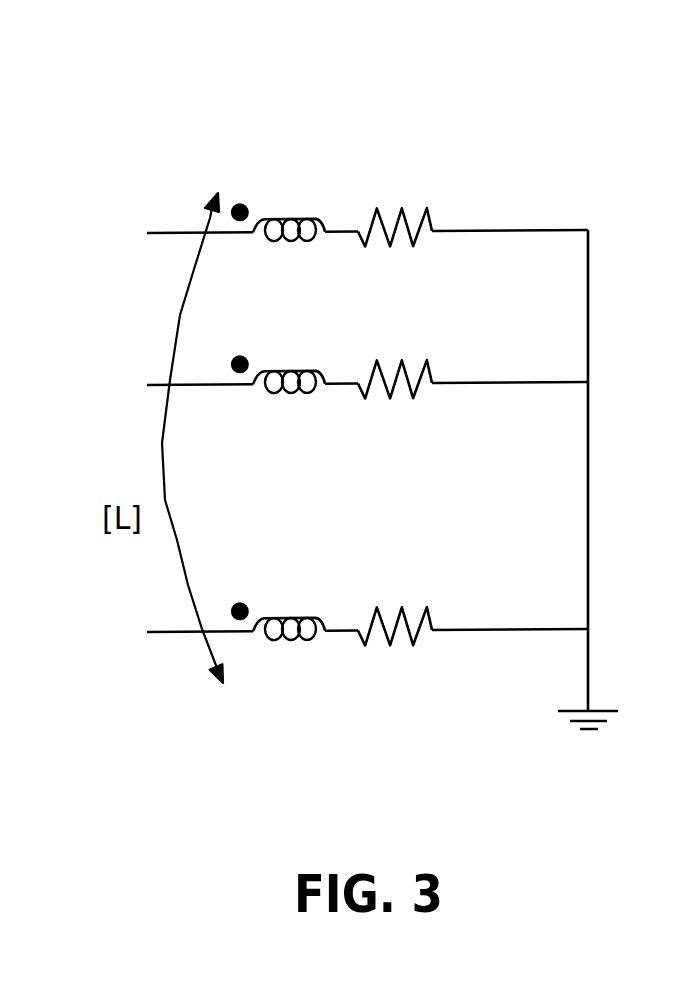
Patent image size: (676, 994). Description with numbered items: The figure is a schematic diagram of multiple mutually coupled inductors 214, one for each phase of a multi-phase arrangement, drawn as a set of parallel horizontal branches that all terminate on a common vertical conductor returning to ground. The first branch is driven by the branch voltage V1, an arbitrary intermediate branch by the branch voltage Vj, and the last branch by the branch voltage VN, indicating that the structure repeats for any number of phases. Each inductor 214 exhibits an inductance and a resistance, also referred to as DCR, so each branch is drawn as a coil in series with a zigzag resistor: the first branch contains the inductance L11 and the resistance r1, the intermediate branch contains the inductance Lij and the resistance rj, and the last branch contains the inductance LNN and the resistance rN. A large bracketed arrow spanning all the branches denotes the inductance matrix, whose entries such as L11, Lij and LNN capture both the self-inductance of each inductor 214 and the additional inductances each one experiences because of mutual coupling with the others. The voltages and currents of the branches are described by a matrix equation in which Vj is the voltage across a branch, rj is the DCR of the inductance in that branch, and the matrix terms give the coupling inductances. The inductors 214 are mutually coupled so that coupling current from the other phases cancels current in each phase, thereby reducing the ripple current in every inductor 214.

The inductor 214 is at (407, 97).
The resistance of the first phase inductor r1 is at (395, 202).
The DCR of the inductance in branch j rj is at (395, 354).
The resistance of the Nth phase inductor rN is at (395, 600).
The self-inductance of the first phase inductor L11 is at (295, 175).
The inductance matrix element Lij is at (288, 332).
The self-inductance of the Nth phase inductor LNN is at (297, 575).
The voltage across the first branch V1 is at (93, 242).
The voltage across branch j Vj is at (89, 393).
The voltage across the Nth branch VN is at (94, 643).